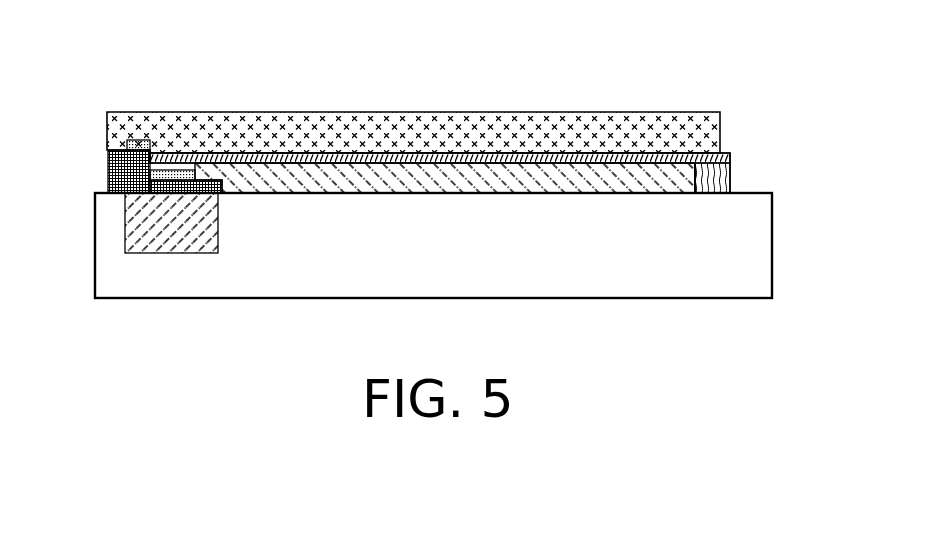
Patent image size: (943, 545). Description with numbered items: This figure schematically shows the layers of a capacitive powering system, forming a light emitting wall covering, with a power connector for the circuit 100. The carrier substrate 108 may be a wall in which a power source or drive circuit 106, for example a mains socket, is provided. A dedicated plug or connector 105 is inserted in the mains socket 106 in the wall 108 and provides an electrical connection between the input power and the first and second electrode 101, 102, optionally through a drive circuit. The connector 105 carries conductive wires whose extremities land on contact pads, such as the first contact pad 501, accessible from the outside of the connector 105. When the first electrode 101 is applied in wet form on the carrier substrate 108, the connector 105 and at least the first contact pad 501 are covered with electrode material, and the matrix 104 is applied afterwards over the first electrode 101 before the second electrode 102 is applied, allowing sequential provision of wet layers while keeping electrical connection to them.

The circuit 100 is at (757, 91).
The first electrode 101 is at (290, 185).
The second electrode 102 is at (290, 122).
The matrix 104 is at (383, 158).
The connector 105 is at (131, 140).
The drive circuit 106 is at (125, 225).
The carrier substrate 108 is at (245, 283).
The first contact pad 501 is at (184, 170).